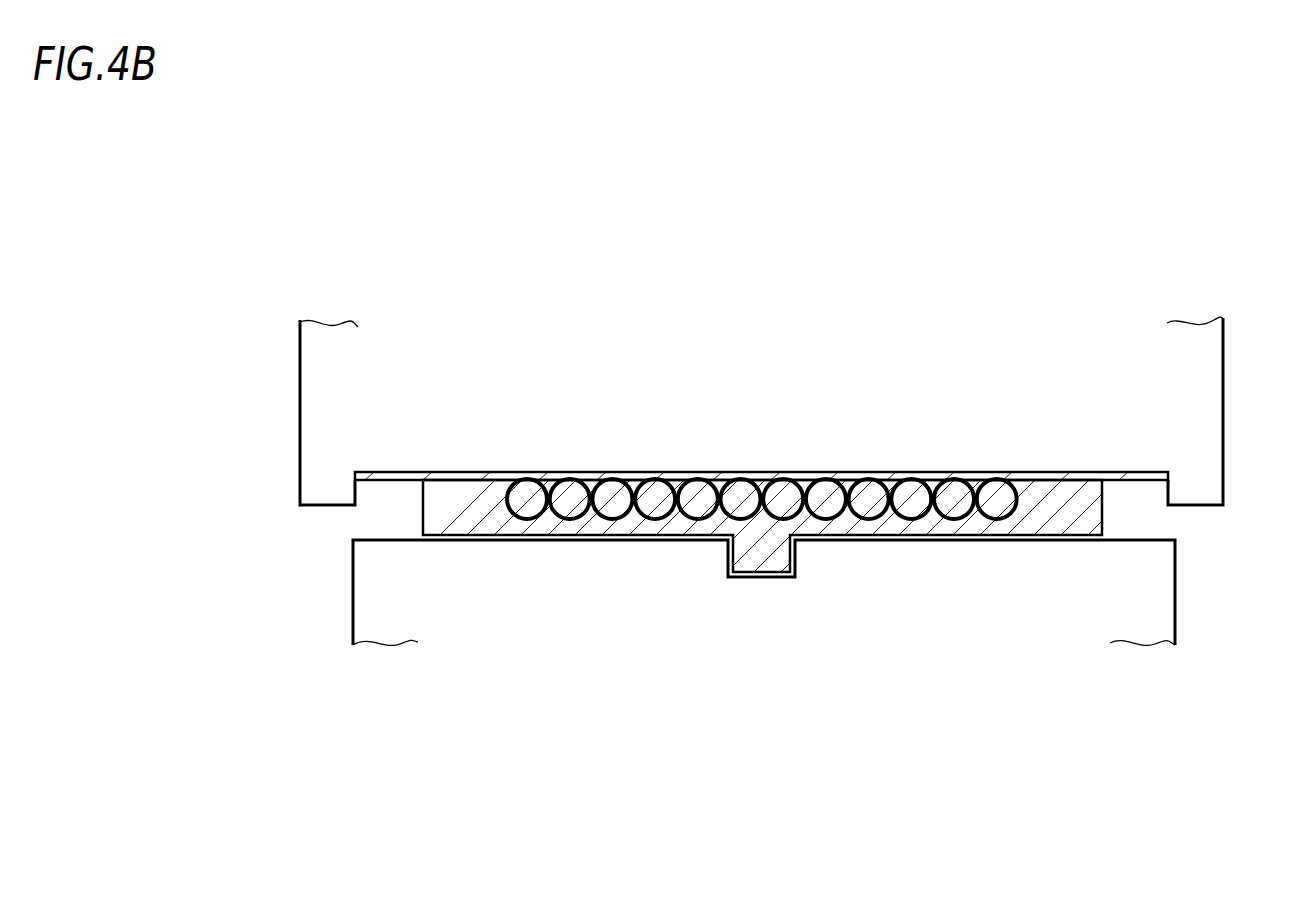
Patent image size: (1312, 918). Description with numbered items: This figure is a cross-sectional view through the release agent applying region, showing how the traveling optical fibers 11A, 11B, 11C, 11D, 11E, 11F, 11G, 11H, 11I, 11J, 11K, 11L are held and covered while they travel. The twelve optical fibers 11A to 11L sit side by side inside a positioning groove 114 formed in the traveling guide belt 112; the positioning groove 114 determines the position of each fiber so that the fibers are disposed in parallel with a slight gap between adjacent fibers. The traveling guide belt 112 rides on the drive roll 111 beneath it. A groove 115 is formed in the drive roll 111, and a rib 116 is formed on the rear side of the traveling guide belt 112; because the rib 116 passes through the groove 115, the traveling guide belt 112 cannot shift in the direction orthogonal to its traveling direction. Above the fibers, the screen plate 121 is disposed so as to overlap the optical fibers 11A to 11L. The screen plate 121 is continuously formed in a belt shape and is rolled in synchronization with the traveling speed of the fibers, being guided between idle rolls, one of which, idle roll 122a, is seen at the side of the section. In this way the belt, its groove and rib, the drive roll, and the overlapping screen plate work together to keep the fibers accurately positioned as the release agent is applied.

The optical fiber 11A is at (530, 493).
The optical fiber 11B is at (571, 493).
The optical fiber 11C is at (614, 493).
The optical fiber 11D is at (656, 493).
The optical fiber 11E is at (699, 493).
The optical fiber 11F is at (741, 493).
The optical fiber 11G is at (784, 493).
The optical fiber 11H is at (826, 493).
The optical fiber 11I is at (869, 493).
The optical fiber 11J is at (911, 493).
The optical fiber 11K is at (955, 493).
The optical fiber 11L is at (996, 493).
The drive roll 111 is at (1140, 590).
The traveling guide belt 112 is at (1083, 508).
The positioning groove 114 is at (528, 492).
The groove 115 is at (797, 560).
The rib 116 is at (747, 555).
The screen plate 121 is at (1058, 476).
The idle roll 122a is at (1163, 375).